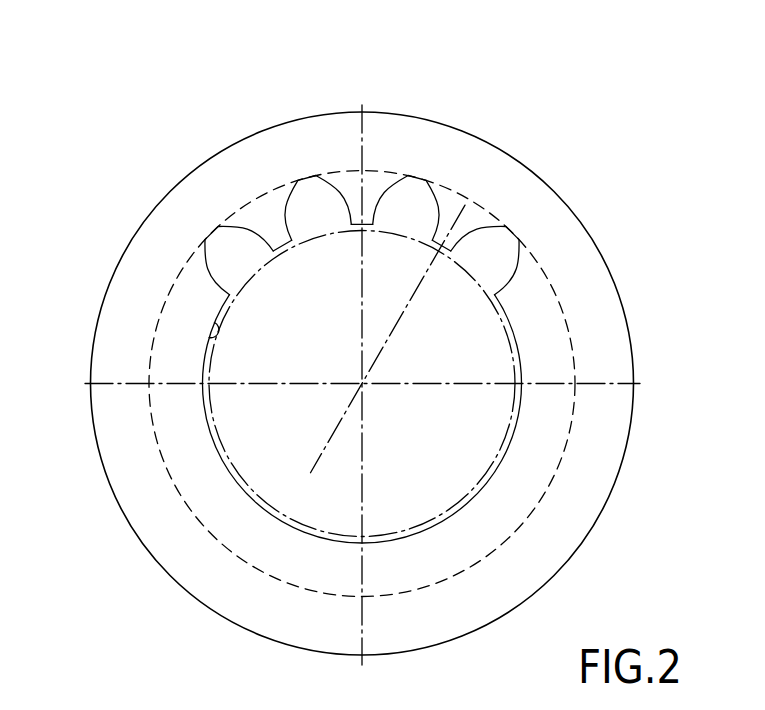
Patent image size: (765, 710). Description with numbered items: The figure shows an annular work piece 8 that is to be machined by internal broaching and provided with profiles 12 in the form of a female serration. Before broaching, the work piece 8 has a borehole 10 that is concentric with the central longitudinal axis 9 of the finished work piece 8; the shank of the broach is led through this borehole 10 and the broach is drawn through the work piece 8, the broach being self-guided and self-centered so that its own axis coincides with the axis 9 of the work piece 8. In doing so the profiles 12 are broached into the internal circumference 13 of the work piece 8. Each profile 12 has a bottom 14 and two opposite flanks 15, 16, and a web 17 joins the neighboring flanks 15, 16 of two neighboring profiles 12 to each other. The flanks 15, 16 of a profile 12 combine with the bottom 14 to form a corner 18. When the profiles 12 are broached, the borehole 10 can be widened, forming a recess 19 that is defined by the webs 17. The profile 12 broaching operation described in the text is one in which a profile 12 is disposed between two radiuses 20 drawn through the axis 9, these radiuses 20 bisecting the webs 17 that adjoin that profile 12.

The work piece 8 is at (646, 290).
The central longitudinal axis 9 is at (362, 385).
The borehole 10 is at (447, 465).
The profile 12 is at (304, 165).
The internal circumference 13 is at (513, 405).
The bottom 14 is at (211, 230).
The flank 15 is at (382, 192).
The flank 16 is at (436, 205).
The web 17 is at (281, 243).
The corner 18 is at (520, 240).
The recess 19 is at (210, 332).
The radius 20 is at (361, 287).